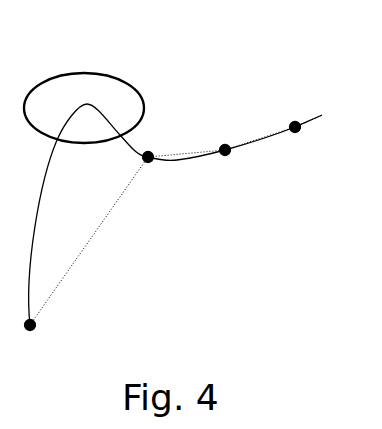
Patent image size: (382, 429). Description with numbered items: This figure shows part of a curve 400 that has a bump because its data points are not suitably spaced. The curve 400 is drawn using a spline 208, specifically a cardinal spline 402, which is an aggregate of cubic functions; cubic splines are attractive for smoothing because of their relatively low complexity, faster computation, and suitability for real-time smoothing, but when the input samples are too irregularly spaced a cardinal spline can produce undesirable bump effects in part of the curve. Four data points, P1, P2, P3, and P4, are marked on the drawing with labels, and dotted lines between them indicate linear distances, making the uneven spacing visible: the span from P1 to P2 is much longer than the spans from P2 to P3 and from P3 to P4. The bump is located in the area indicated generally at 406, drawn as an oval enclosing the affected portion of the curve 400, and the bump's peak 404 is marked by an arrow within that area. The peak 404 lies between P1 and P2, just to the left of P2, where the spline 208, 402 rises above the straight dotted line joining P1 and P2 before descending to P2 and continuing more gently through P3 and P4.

The curve 400 is at (173, 182).
The cardinal spline 402 is at (175, 210).
The spline 208 is at (175, 210).
The peak of the bump 404 is at (124, 106).
The bump area 406 is at (128, 85).
The point P1 is at (51, 328).
The point P2 is at (128, 165).
The point P3 is at (230, 168).
The point P4 is at (306, 145).